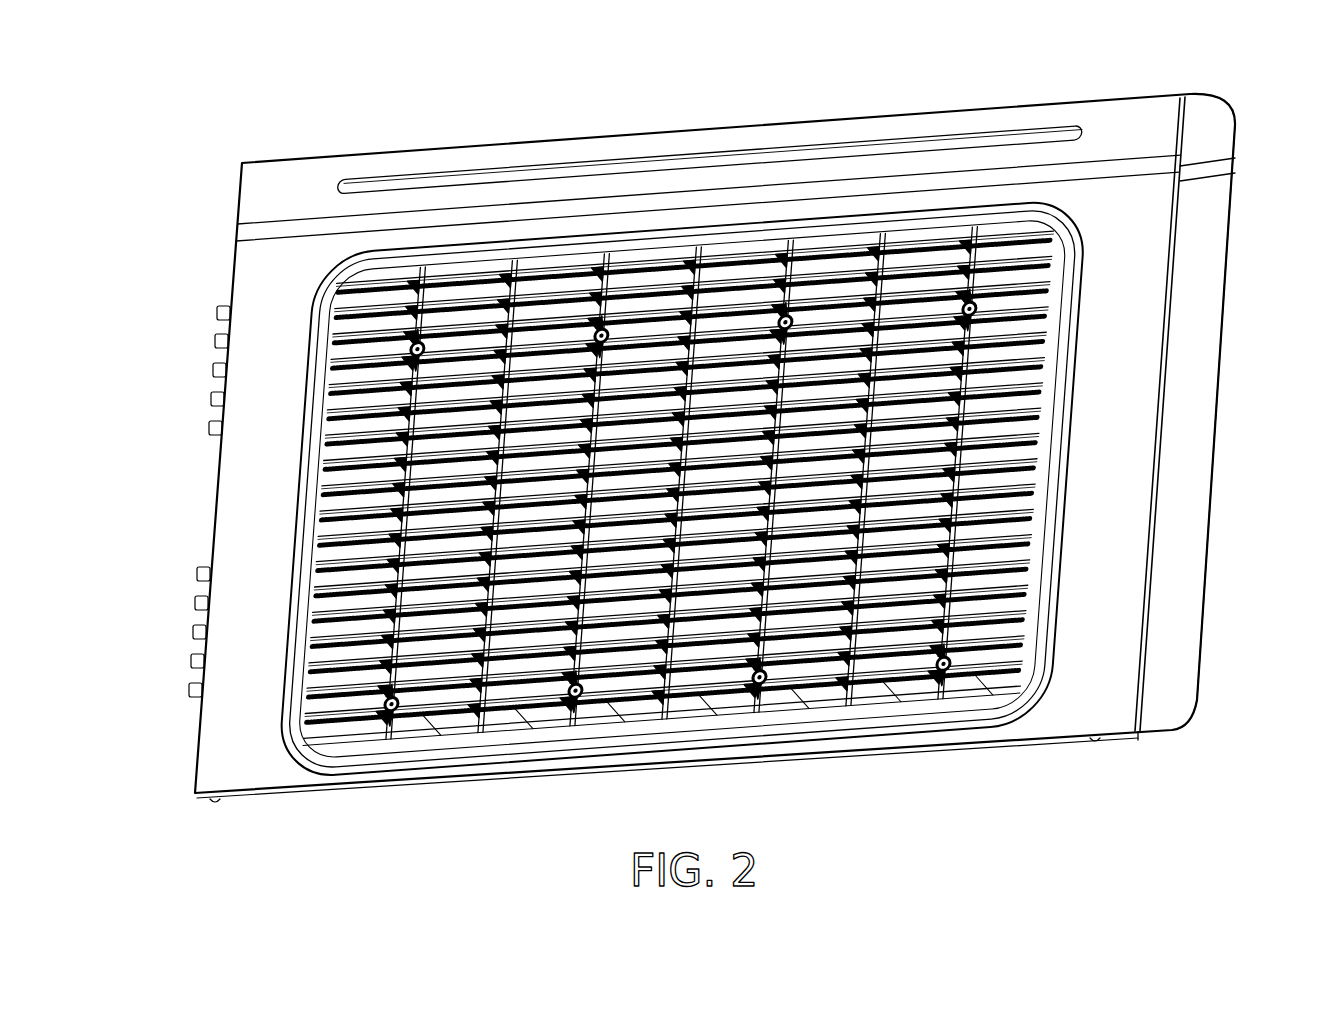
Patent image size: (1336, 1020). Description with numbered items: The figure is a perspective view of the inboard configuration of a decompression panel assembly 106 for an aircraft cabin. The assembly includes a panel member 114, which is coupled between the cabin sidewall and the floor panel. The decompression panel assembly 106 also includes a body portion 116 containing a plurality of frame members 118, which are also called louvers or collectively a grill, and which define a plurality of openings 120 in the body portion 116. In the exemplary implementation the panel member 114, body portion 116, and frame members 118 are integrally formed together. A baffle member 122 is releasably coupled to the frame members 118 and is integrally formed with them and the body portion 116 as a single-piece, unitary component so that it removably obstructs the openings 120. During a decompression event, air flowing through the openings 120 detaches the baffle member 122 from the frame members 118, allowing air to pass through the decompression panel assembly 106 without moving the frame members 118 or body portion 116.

The decompression panel assembly 106 is at (183, 155).
The panel member 114 is at (1152, 217).
The body portion 116 is at (338, 303).
The frame members 118 is at (337, 450).
The openings 120 is at (335, 473).
The baffle member 122 is at (322, 612).